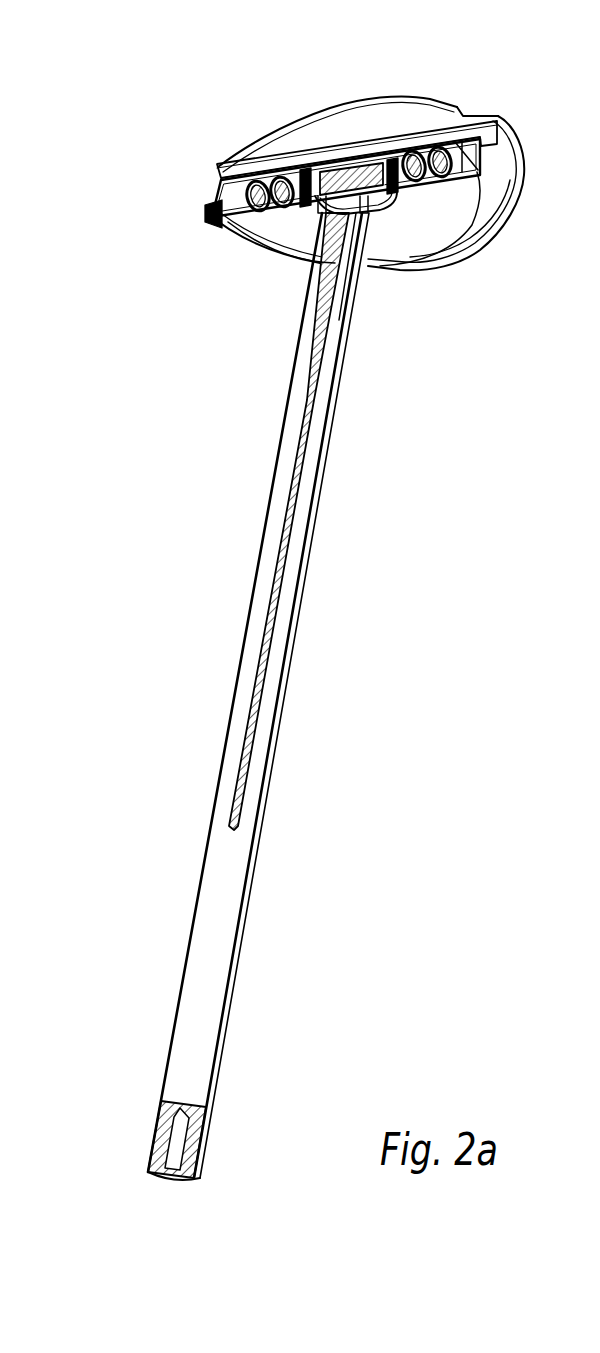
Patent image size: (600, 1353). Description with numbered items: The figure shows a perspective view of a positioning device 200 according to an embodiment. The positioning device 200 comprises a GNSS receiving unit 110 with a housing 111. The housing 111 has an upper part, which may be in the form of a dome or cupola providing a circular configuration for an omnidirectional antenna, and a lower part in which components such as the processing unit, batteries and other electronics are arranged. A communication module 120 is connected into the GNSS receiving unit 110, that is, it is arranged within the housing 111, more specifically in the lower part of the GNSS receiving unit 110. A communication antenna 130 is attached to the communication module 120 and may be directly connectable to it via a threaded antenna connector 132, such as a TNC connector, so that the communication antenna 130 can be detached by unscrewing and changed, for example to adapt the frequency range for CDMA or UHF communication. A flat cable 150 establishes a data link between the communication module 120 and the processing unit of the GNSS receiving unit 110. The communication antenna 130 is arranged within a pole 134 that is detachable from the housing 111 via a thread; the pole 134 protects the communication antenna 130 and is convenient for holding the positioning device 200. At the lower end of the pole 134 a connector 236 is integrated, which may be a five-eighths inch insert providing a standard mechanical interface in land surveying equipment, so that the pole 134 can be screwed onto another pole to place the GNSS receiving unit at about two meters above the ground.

The positioning device 200 is at (146, 122).
The GNSS receiving unit 110 is at (445, 99).
The housing 111 is at (443, 237).
The communication module 120 is at (310, 158).
The flat cable 150 is at (355, 150).
The threaded antenna connector 132 is at (300, 210).
The communication antenna 130 is at (296, 498).
The pole 134 is at (262, 803).
The connector 236 is at (176, 1146).